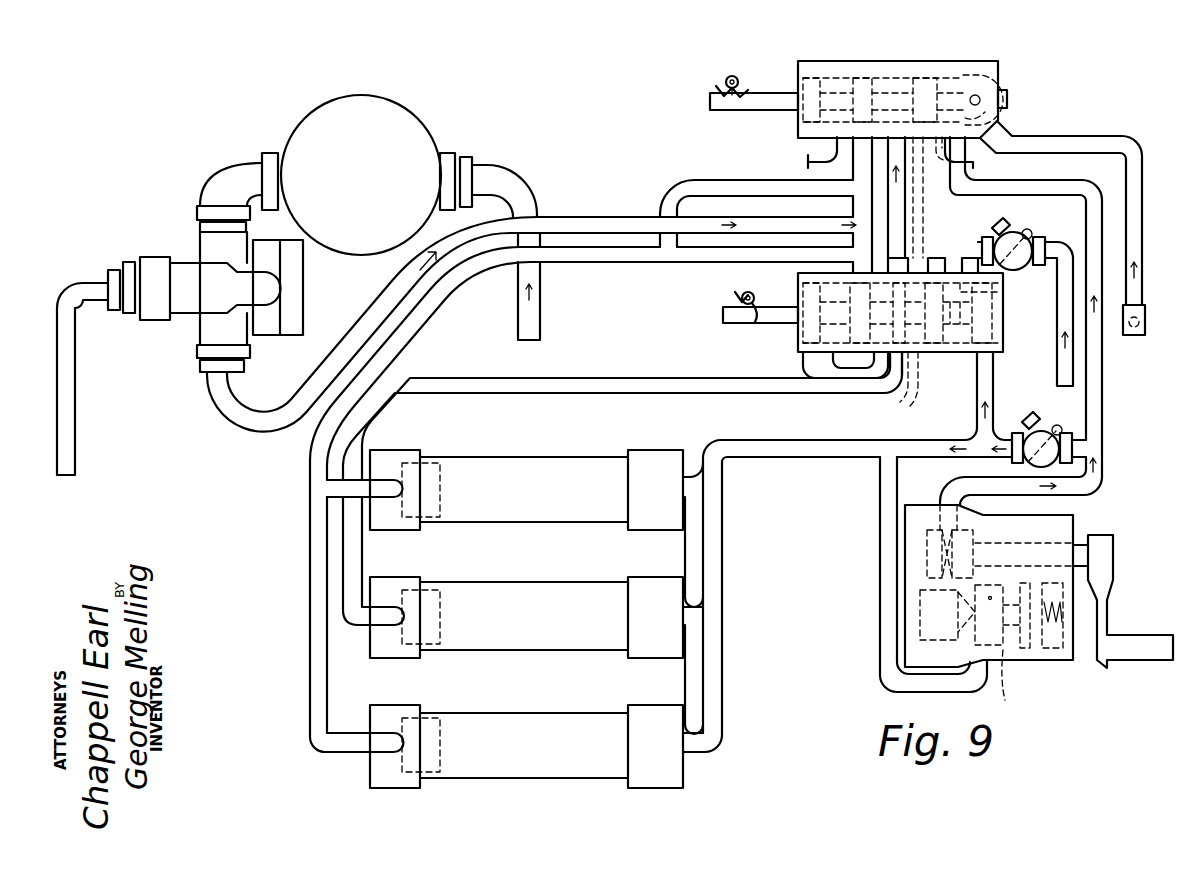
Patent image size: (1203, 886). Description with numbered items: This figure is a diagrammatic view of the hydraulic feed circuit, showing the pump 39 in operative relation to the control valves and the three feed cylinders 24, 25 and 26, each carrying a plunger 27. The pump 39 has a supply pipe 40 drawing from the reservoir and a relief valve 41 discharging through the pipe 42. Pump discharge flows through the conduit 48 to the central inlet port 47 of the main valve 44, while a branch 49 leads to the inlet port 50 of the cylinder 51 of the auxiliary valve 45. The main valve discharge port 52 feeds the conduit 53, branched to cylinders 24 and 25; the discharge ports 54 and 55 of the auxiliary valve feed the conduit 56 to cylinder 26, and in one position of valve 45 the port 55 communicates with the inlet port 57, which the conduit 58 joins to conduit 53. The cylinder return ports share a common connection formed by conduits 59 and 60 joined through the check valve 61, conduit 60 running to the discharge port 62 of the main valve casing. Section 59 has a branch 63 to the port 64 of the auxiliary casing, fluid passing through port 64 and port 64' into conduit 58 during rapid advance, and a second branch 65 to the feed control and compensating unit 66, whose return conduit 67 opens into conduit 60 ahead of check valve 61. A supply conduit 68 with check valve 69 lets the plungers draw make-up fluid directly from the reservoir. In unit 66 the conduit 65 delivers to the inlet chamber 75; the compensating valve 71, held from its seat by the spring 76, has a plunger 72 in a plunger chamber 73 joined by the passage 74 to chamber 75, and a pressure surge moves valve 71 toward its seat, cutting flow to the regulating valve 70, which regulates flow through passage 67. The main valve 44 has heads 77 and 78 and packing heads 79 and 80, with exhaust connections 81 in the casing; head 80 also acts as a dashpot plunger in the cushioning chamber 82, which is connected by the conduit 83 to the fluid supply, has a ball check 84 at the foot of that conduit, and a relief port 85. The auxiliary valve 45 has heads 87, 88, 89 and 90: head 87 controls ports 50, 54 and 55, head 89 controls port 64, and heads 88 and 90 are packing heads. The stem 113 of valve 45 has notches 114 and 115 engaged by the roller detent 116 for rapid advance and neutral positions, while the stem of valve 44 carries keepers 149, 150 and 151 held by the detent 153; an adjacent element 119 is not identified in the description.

The cylinder 24 is at (505, 522).
The cylinder 25 is at (503, 713).
The cylinder 26 is at (556, 582).
The plunger 27 is at (438, 465).
The pump 39 is at (430, 138).
The supply pipe 40 is at (540, 300).
The relief valve 41 is at (190, 312).
The pipe 42 is at (75, 430).
The main valve 44 is at (842, 90).
The auxiliary control valve 45 is at (920, 335).
The central inlet port 47 is at (908, 205).
The conduit 48 is at (368, 320).
The branch 49 is at (861, 240).
The inlet port 50 is at (803, 285).
The cylinder 51 is at (800, 343).
The discharge port 52 is at (845, 142).
The conduit 53 is at (712, 182).
The discharge port 54 is at (850, 370).
The discharge port 55 is at (908, 372).
The conduit 56 is at (645, 393).
The inlet port 57 is at (928, 258).
The conduit 58 is at (958, 255).
The conduit 59 is at (818, 457).
The conduit 60 is at (1072, 186).
The check valve 61 is at (1058, 430).
The discharge port 62 is at (942, 150).
The branch 63 is at (995, 400).
The port 64 is at (1011, 317).
The port 64' is at (1002, 289).
The branch 65 is at (880, 560).
The feed control and compensating unit 66 is at (1036, 661).
The return conduit 67 is at (1093, 485).
The supply conduit 68 is at (1065, 266).
The check valve 69 is at (1015, 232).
The regulating valve 70 is at (972, 545).
The compensating valve 71 is at (945, 630).
The plunger 72 is at (1006, 650).
The plunger chamber 73 is at (1032, 640).
The passage 74 is at (1014, 688).
The inlet chamber 75 is at (918, 615).
The spring 76 is at (1062, 606).
The head 77 is at (864, 92).
The head 78 is at (925, 92).
The packing head 79 is at (803, 117).
The packing head 80 is at (995, 82).
The exhaust connections 81 is at (807, 157).
The dashpot chamber 82 is at (988, 120).
The conduit 83 is at (1113, 142).
The ball check 84 is at (1146, 320).
The relief port 85 is at (980, 100).
The head 87 is at (882, 391).
The head 88 is at (940, 332).
The head 89 is at (1000, 318).
The head 90 is at (815, 345).
The stem 113 is at (732, 325).
The notch 114 is at (737, 294).
The notch 115 is at (754, 324).
The roller spring pressed detent 116 is at (755, 298).
The valve rod 119 is at (714, 110).
The keeper 149 is at (718, 87).
The keeper 150 is at (732, 98).
The keeper 151 is at (746, 92).
The detent 153 is at (733, 76).